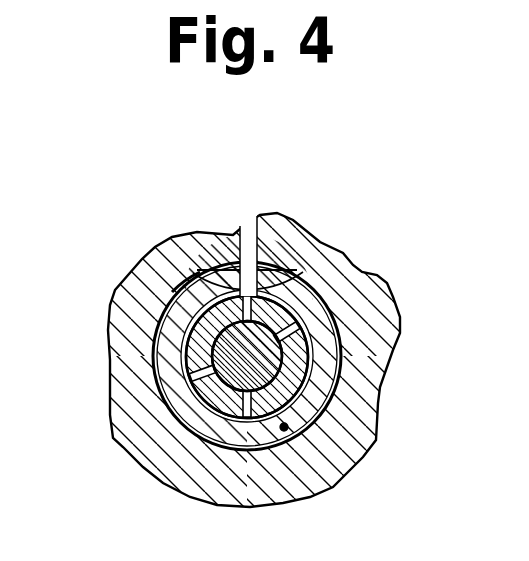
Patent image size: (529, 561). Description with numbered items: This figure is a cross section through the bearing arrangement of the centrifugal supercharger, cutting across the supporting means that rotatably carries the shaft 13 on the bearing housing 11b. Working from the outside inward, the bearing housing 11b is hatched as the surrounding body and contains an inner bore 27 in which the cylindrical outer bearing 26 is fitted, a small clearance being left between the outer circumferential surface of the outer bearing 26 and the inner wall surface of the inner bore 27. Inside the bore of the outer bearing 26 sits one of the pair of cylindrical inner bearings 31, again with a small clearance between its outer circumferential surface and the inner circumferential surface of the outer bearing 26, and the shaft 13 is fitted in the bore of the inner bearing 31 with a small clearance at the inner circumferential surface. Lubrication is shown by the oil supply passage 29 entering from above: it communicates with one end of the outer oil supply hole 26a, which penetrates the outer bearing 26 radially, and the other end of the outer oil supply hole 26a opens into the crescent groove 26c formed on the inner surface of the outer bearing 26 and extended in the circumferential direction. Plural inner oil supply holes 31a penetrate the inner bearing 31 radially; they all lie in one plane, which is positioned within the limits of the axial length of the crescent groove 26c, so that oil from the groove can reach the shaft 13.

The bearing housing 11b is at (380, 318).
The outer bearing 26 is at (312, 391).
The outer oil supply hole 26a is at (180, 287).
The crescent groove 26c is at (306, 247).
The inner bore 27 is at (288, 432).
The oil supply passage 29 is at (247, 232).
The inner bearing 31 is at (194, 352).
The inner oil supply hole 31a is at (243, 308).
The shaft 13 is at (230, 372).